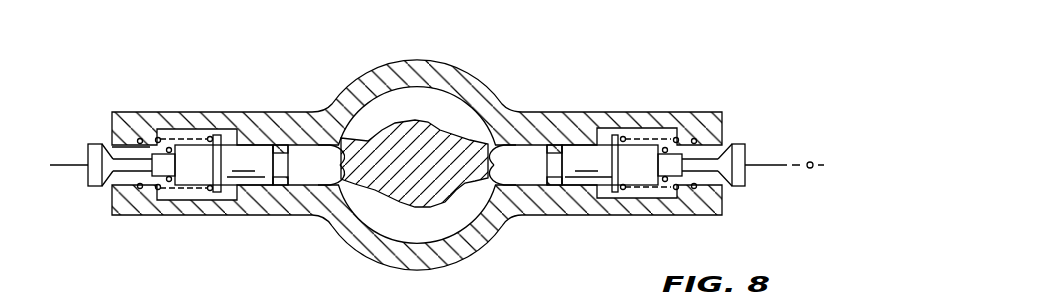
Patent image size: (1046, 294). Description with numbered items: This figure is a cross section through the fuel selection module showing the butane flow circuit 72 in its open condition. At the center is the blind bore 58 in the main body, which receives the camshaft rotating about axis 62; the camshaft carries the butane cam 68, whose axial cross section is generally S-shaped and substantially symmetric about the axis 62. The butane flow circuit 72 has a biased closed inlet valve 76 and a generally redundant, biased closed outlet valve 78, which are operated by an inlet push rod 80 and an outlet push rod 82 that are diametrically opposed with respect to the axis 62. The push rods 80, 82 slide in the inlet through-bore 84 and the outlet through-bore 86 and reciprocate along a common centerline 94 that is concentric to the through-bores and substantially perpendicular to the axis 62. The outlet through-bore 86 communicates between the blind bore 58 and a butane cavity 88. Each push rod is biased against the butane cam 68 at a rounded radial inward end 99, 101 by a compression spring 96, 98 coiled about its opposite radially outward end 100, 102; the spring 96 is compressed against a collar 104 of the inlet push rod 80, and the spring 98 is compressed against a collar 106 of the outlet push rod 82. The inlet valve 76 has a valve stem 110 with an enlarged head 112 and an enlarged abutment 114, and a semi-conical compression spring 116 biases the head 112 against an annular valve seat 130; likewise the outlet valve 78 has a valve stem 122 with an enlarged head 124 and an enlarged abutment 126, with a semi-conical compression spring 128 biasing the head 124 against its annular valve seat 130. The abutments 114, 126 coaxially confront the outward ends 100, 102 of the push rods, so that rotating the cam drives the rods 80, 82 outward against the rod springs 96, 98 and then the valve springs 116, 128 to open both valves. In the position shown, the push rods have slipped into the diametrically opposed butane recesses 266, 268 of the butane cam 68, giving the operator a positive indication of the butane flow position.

The blind bore 58 is at (427, 230).
The axis 62 is at (412, 163).
The butane cam 68 is at (430, 132).
The butane flow circuit 72 is at (794, 52).
The inlet valve 76 is at (747, 132).
The outlet valve 78 is at (86, 136).
The inlet push rod 80 is at (588, 162).
The outlet push rod 82 is at (246, 162).
The inlet through-bore 84 is at (533, 150).
The outlet through-bore 86 is at (318, 172).
The butane cavity 88 is at (230, 137).
The centerline 94 is at (811, 168).
The compression spring 96 is at (650, 138).
The compression spring 98 is at (183, 190).
The rounded radial inward end 99 is at (510, 168).
The radially outward end 100 is at (637, 167).
The rounded radial inward end 101 is at (333, 172).
The radially outward end 102 is at (197, 173).
The collar 104 is at (625, 163).
The collar 106 is at (213, 160).
The valve stem 110 is at (707, 160).
The enlarged head 112 is at (743, 170).
The enlarged abutment 114 is at (673, 163).
The semi-conical compression spring 116 is at (685, 147).
The valve stem 122 is at (130, 163).
The enlarged head 124 is at (88, 175).
The enlarged abutment 126 is at (160, 170).
The semi-conical compression spring 128 is at (155, 147).
The annular valve seat 130 is at (115, 147).
The butane recess 266 is at (513, 153).
The butane recess 268 is at (337, 163).